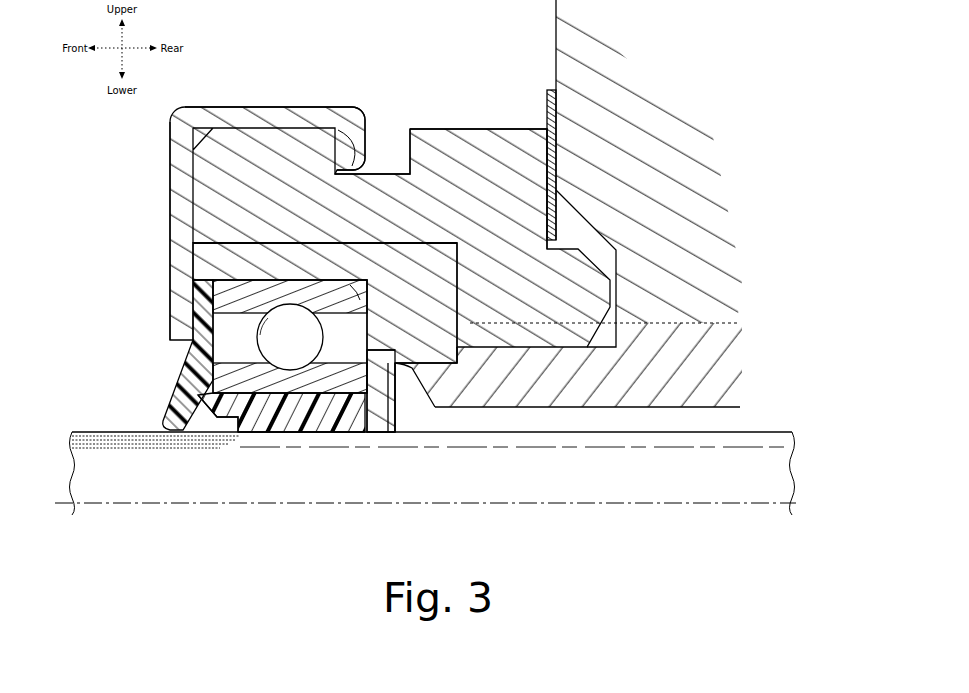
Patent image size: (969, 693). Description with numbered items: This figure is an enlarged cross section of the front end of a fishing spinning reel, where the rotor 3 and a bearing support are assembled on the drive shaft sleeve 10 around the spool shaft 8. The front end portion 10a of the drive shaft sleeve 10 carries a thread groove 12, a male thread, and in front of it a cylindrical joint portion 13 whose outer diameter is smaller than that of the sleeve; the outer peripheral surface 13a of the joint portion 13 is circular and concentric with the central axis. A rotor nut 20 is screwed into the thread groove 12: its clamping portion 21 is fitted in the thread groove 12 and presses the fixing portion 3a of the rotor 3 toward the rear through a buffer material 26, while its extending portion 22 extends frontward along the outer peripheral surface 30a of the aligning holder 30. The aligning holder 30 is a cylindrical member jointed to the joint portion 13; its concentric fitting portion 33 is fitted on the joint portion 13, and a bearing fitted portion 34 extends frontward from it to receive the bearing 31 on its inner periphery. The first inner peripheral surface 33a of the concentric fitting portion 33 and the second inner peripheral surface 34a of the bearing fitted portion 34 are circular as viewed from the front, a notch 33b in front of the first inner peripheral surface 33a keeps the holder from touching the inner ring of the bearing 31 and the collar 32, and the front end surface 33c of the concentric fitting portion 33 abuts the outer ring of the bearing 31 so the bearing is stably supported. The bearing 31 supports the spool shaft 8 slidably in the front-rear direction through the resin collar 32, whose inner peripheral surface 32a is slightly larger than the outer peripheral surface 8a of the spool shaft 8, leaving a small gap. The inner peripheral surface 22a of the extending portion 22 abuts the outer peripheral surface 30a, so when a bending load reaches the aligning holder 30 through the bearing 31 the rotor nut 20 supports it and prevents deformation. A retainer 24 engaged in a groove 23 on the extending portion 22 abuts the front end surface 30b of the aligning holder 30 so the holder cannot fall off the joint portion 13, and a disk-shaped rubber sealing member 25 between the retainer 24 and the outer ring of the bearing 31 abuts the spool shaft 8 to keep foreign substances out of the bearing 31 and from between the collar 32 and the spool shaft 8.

The rotor 3 is at (649, 161).
The fixing portion 3a is at (650, 169).
The spool shaft 8 is at (418, 452).
The outer peripheral surface 8a is at (125, 430).
The drive shaft sleeve 10 is at (568, 330).
The front end portion 10a is at (504, 410).
The thread groove 12 is at (545, 320).
The joint portion 13 is at (436, 382).
The outer peripheral surface 13a is at (458, 360).
The rotor nut 20 is at (390, 206).
The clamping portion 21 is at (514, 245).
The extending portion 22 is at (272, 192).
The inner peripheral surface 22a is at (273, 243).
The groove 23 is at (387, 160).
The retainer 24 is at (292, 117).
The sealing member 25 is at (182, 368).
The buffer material 26 is at (547, 108).
The aligning holder 30 is at (293, 288).
The outer peripheral surface 30a is at (345, 243).
The front end surface 30b is at (185, 268).
The bearing 31 is at (323, 433).
The collar 32 is at (290, 433).
The inner peripheral surface 32a is at (255, 433).
The concentric fitting portion 33 is at (421, 307).
The first inner peripheral surface 33a is at (408, 370).
The notch 33b is at (382, 408).
The front end surface 33c is at (350, 283).
The bearing fitted portion 34 is at (306, 271).
The second inner peripheral surface 34a is at (210, 290).